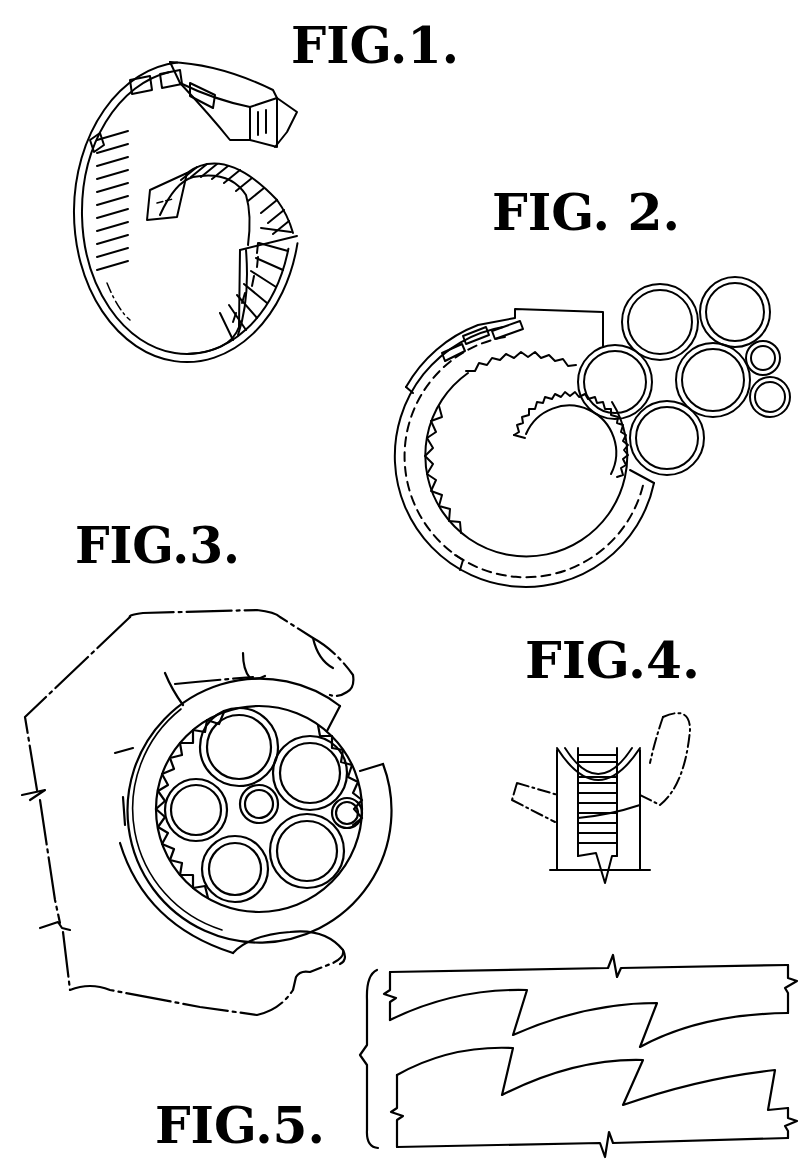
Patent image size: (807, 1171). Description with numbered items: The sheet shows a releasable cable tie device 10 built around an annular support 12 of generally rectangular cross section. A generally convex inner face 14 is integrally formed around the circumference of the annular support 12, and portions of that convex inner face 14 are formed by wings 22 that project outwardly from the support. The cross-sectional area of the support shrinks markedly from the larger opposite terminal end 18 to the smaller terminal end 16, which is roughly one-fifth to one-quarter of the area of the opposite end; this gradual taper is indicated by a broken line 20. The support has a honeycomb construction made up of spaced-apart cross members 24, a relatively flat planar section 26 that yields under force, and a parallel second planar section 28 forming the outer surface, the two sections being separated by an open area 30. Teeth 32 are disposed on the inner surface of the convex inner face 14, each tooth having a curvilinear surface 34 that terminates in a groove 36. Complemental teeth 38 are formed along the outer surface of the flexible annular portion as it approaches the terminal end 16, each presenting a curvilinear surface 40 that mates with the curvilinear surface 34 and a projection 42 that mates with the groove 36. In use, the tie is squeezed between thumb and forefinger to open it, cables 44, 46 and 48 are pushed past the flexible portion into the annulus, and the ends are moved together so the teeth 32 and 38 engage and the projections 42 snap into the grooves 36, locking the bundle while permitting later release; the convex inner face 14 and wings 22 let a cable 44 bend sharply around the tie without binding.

In FIG. 1, the cable tie device 10 is at (328, 80).
In FIG. 2, the cable tie device 10 is at (388, 506).
In FIG. 3, the cable tie device 10 is at (358, 698).
In FIG. 1, the annular support 12 is at (262, 73).
In FIG. 3, the annular support 12 is at (345, 716).
In FIG. 1, the convex inner face 14 is at (137, 318).
In FIG. 2, the convex inner face 14 is at (524, 457).
In FIG. 3, the convex inner face 14 is at (260, 811).
In FIG. 4, the convex inner face 14 is at (627, 860).
In FIG. 2, the terminal end 16 is at (520, 430).
In FIG. 2, the opposite terminal end 18 is at (605, 320).
In FIG. 2, the broken line 20 is at (457, 568).
In FIG. 1, the wings 22 is at (243, 133).
In FIG. 3, the wings 22 is at (135, 853).
In FIG. 4, the wings 22 is at (557, 750).
In FIG. 1, the cross members 24 is at (173, 80).
In FIG. 2, the cross members 24 is at (487, 325).
In FIG. 1, the flat planar section 26 is at (187, 102).
In FIG. 2, the flat planar section 26 is at (517, 350).
In FIG. 1, the second planar section 28 is at (178, 82).
In FIG. 2, the second planar section 28 is at (510, 310).
In FIG. 1, the open area 30 is at (140, 85).
In FIG. 2, the open area 30 is at (463, 340).
In FIG. 2, the teeth 32 is at (568, 352).
In FIG. 3, the teeth 32 is at (190, 740).
In FIG. 4, the teeth 32 is at (596, 803).
In FIG. 5, the teeth 32 is at (570, 1083).
In FIG. 5, the curvilinear surface 34 is at (477, 1048).
In FIG. 5, the groove 36 is at (500, 1093).
In FIG. 1, the complemental teeth 38 is at (270, 210).
In FIG. 2, the complemental teeth 38 is at (577, 403).
In FIG. 3, the complemental teeth 38 is at (355, 760).
In FIG. 5, the complemental teeth 38 is at (548, 1007).
In FIG. 5, the curvilinear surface 40 is at (743, 1014).
In FIG. 5, the projection 42 is at (513, 1035).
In FIG. 2, the cable 44 is at (702, 472).
In FIG. 3, the cable 44 is at (322, 884).
In FIG. 4, the cable 44 is at (690, 800).
In FIG. 2, the cable 46 is at (765, 420).
In FIG. 3, the cable 46 is at (227, 830).
In FIG. 2, the cable 48 is at (742, 353).
In FIG. 3, the cable 48 is at (362, 838).